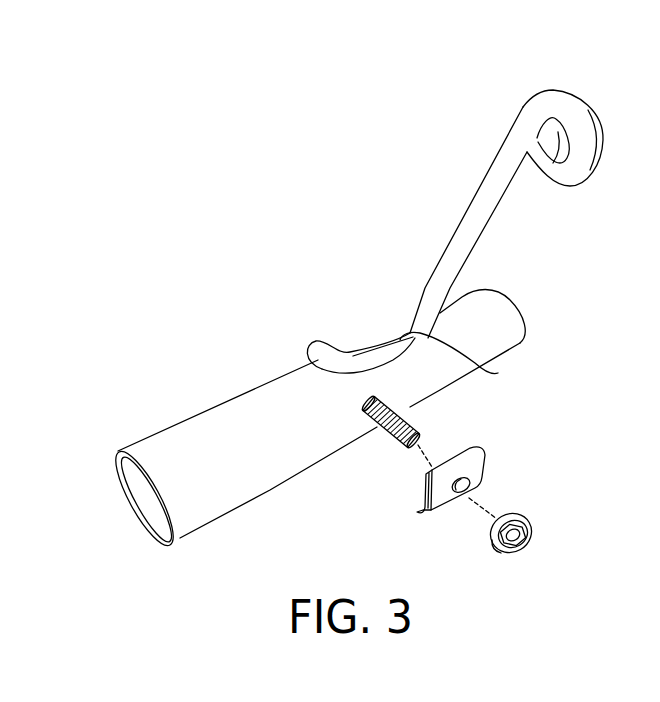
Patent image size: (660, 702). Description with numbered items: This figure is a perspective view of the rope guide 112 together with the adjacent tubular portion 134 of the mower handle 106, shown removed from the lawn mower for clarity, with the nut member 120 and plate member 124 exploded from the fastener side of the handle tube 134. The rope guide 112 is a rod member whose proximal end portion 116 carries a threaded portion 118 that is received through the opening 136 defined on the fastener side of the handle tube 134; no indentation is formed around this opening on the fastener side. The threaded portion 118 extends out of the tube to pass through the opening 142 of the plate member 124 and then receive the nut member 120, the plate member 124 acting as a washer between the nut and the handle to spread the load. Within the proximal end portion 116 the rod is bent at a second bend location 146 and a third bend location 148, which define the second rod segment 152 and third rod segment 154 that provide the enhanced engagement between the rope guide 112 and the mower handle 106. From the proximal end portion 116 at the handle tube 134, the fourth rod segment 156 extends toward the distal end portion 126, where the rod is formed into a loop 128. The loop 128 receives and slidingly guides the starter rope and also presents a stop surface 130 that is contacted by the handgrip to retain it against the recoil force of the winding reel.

The mower handle 106 is at (216, 520).
The tubular portion 134 is at (167, 436).
The rope guide 112 is at (477, 212).
The fourth rod segment 156 is at (472, 232).
The distal end portion 126 is at (542, 87).
The loop 128 is at (604, 151).
The stop surface 130 is at (554, 129).
The second rod segment 152 is at (328, 341).
The second bend location 146 is at (347, 375).
The third rod segment 154 is at (372, 350).
The third bend location 148 is at (483, 365).
The threaded portion 118 is at (413, 423).
The opening 136 is at (373, 396).
The proximal end portion 116 is at (384, 443).
The plate member 124 is at (490, 450).
The opening 142 is at (468, 476).
The nut member 120 is at (503, 553).